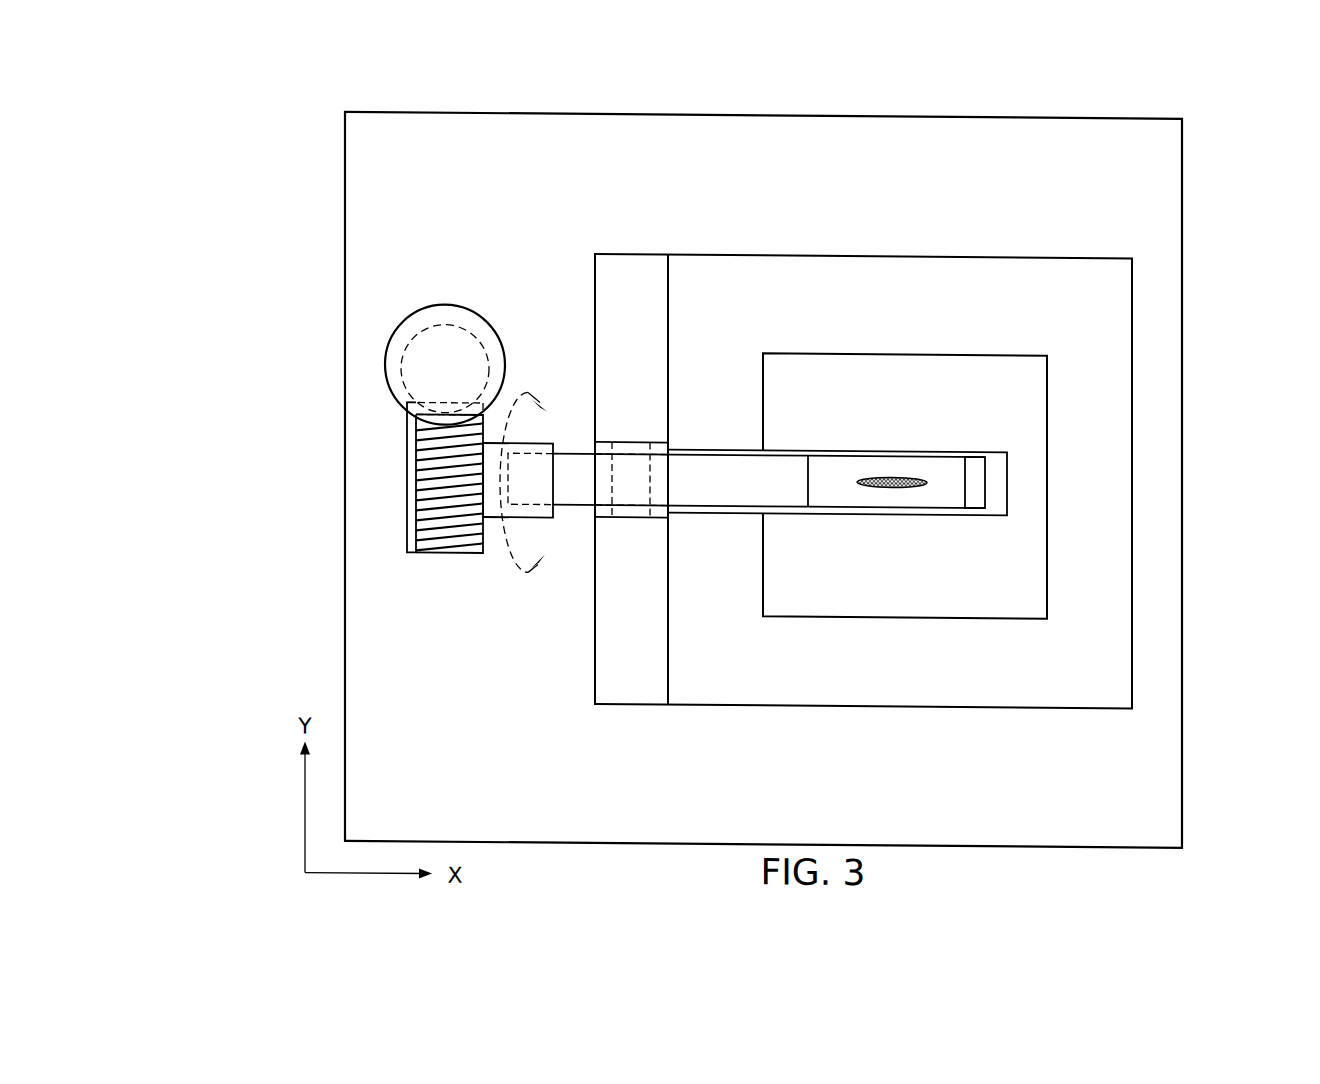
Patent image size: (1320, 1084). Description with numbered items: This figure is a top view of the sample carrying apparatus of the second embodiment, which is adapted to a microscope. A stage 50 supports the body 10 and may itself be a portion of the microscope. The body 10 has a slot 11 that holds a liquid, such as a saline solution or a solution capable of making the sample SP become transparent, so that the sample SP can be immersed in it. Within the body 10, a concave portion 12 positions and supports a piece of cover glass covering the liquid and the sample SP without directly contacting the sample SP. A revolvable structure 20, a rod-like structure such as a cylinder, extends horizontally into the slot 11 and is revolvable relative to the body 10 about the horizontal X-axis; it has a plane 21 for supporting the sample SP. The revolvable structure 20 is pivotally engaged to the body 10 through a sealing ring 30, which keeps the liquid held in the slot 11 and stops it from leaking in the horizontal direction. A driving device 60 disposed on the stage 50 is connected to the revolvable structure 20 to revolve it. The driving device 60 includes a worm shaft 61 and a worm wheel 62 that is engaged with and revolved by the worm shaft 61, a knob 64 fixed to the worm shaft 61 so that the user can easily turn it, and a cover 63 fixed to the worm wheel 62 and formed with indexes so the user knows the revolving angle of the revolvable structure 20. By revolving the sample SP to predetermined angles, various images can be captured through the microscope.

The body 10 is at (1134, 585).
The slot 11 is at (1003, 480).
The concave portion 12 is at (913, 594).
The revolvable structure 20 is at (570, 460).
The plane 21 is at (940, 472).
The sealing ring 30 is at (650, 482).
The stage 50 is at (1182, 188).
The driving device 60 is at (379, 438).
The worm shaft 61 is at (408, 386).
The worm wheel 62 is at (417, 450).
The cover 63 is at (413, 492).
The knob 64 is at (385, 370).
The sample SP is at (880, 471).